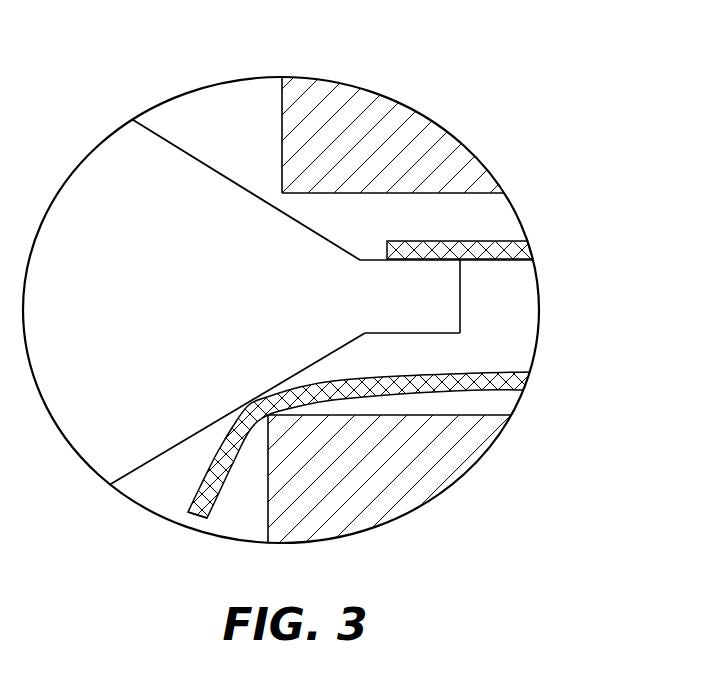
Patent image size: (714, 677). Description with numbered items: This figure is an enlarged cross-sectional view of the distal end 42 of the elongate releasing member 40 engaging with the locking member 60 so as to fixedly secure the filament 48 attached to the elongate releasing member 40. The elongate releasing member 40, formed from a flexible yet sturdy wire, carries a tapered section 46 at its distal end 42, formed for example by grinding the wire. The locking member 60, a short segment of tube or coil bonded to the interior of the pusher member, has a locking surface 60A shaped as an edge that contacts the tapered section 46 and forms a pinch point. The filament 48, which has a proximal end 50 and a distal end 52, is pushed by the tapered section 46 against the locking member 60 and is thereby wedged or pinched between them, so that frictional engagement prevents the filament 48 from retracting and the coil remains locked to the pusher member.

The elongate releasing member 40 is at (229, 318).
The distal end 42 is at (460, 283).
The tapered section 46 is at (184, 152).
The filament 48 is at (500, 370).
The proximal end 50 is at (486, 241).
The distal end 52 is at (188, 510).
The locking member 60 is at (350, 117).
The locking surface 60A is at (280, 193).